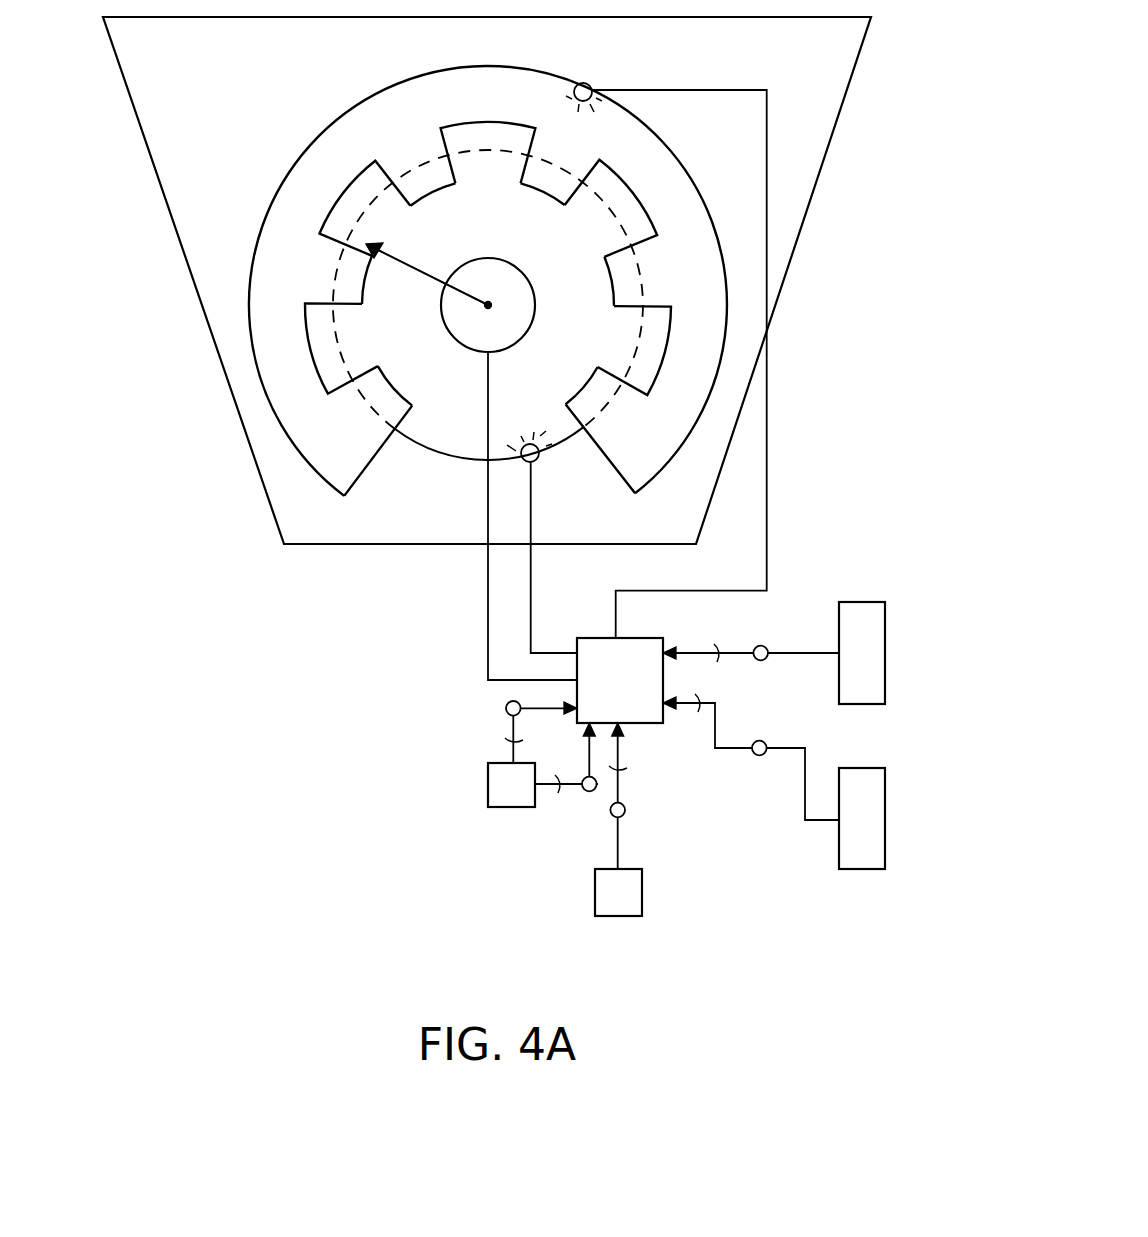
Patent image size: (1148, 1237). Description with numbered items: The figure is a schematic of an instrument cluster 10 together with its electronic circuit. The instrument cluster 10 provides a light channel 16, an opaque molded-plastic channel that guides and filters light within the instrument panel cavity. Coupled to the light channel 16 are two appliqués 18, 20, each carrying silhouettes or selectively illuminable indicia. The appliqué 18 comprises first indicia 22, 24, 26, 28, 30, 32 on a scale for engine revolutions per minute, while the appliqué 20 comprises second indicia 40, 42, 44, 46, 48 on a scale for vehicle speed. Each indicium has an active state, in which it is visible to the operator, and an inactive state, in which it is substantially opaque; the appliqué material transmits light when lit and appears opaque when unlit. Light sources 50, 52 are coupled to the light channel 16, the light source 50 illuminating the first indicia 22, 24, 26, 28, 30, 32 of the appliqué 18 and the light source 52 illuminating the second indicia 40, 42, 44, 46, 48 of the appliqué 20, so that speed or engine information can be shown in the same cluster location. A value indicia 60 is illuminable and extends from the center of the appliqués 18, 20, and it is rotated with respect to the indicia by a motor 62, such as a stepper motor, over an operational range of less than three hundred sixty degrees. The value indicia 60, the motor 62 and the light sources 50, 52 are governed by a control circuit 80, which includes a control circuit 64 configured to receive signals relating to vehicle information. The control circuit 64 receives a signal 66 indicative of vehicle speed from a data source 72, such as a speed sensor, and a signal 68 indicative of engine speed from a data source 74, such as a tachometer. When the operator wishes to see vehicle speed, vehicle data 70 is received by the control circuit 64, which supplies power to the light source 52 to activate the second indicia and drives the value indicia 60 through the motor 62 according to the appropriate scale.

The instrument cluster 10 is at (500, 484).
The light channel 16 is at (202, 315).
The appliqué 18 is at (433, 455).
The appliqué 20 is at (695, 183).
The first indicia 22 is at (596, 415).
The first indicia 24 is at (638, 281).
The first indicia 26 is at (557, 168).
The first indicia 28 is at (430, 165).
The first indicia 30 is at (335, 277).
The first indicia 32 is at (375, 402).
The second indicia 40 is at (318, 352).
The second indicia 42 is at (370, 213).
The second indicia 44 is at (487, 162).
The second indicia 46 is at (602, 213).
The second indicia 48 is at (637, 340).
The light source 50 is at (540, 462).
The light source 52 is at (583, 82).
The value indicia 60 is at (424, 274).
The motor 62 is at (514, 346).
The control circuit 64 is at (595, 637).
The signal 66 is at (764, 646).
The signal 68 is at (760, 741).
The vehicle data 70 is at (625, 810).
The data source 72 is at (873, 600).
The data source 74 is at (867, 869).
The control circuit 80 is at (746, 884).